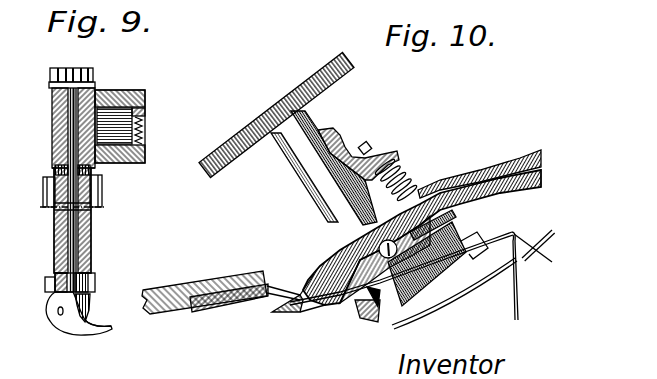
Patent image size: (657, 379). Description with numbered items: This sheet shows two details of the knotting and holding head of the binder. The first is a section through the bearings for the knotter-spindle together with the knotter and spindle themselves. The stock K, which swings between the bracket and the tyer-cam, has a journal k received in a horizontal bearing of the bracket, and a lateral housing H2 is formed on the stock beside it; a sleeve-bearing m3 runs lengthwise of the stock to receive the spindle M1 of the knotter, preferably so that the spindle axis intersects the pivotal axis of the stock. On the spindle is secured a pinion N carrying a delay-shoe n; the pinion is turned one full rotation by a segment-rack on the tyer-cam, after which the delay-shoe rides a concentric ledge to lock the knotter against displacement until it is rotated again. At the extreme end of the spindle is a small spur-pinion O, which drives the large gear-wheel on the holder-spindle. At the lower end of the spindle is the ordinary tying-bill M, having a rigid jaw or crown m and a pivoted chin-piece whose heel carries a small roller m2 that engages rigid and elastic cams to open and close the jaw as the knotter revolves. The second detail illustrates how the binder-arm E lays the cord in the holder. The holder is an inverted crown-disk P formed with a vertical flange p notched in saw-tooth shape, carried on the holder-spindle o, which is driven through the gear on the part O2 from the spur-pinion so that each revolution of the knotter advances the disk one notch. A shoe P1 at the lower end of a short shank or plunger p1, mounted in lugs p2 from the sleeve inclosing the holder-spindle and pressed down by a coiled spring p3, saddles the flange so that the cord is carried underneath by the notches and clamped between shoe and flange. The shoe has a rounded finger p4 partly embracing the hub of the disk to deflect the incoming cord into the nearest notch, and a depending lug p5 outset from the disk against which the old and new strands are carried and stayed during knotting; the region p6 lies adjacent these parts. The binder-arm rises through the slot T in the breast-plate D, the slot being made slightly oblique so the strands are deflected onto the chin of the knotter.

In FIG. 9, the spur-pinion O is at (94, 72).
In FIG. 9, the stock K is at (52, 127).
In FIG. 9, the lateral housing H2 is at (145, 97).
In FIG. 9, the journal k is at (138, 129).
In FIG. 9, the sleeve-bearing m3 is at (53, 150).
In FIG. 9, the delay-shoe n is at (43, 191).
In FIG. 9, the pinion N is at (102, 192).
In FIG. 9, the spindle M1 is at (78, 236).
In FIG. 9, the roller m2 is at (45, 284).
In FIG. 9, the tying-bill M is at (72, 313).
In FIG. 9, the rigid jaw or crown m is at (80, 332).
In FIG. 10, the handle O2 is at (276, 115).
In FIG. 10, the holder-spindle o is at (304, 177).
In FIG. 10, the lugs p2 is at (392, 149).
In FIG. 10, the shank or plunger p1 is at (367, 141).
In FIG. 10, the coiled spring p3 is at (405, 179).
In FIG. 10, the binder-arm E is at (512, 162).
In FIG. 10, the sleeve p6 is at (385, 259).
In FIG. 10, the rounded finger p4 is at (360, 290).
In FIG. 10, the inverted crown-disk P is at (417, 302).
In FIG. 10, the vertical flange p is at (388, 270).
In FIG. 10, the shoe P1 is at (439, 225).
In FIG. 10, the depending lug p5 is at (476, 259).
In FIG. 10, the deflector or breast-plate D is at (540, 240).
In FIG. 10, the slot T is at (533, 259).